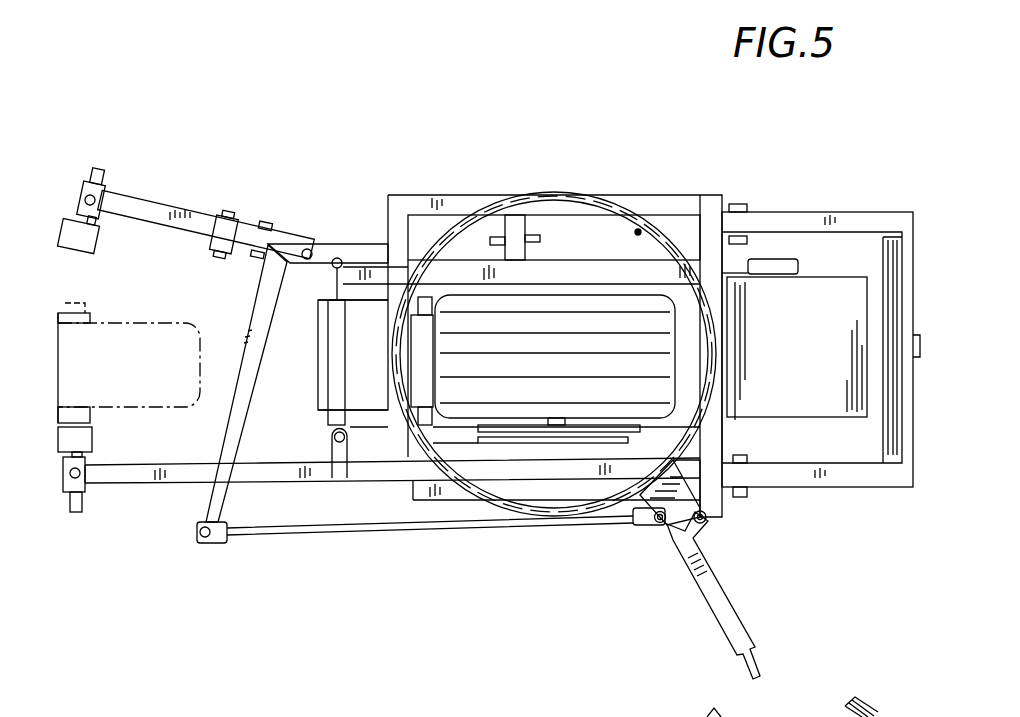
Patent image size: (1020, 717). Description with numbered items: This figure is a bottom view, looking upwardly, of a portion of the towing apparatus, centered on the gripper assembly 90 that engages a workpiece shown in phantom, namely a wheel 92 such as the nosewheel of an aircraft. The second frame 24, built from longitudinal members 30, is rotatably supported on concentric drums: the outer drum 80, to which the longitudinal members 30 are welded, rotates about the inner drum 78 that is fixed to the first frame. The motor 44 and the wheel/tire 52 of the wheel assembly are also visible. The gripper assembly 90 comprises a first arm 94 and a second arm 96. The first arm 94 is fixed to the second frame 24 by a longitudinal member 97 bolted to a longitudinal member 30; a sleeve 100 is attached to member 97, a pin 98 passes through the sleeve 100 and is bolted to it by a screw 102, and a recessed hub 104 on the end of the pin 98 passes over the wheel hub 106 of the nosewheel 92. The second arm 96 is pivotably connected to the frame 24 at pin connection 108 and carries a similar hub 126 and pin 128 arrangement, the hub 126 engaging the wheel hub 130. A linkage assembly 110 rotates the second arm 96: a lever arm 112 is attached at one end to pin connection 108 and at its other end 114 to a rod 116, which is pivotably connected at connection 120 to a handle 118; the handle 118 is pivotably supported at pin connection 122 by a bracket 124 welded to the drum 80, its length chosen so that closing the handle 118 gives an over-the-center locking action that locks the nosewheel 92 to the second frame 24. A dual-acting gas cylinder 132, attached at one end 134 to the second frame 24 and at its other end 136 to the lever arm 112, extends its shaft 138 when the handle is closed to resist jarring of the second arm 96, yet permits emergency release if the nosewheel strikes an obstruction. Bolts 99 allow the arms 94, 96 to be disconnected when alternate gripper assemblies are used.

The second frame 24 is at (288, 490).
The longitudinal member 30 is at (410, 250).
The motor 44 is at (822, 297).
The wheel/tire 52 is at (590, 322).
The inner drum 78 is at (640, 232).
The outer drum 80 is at (610, 200).
The gripper assembly 90 is at (185, 173).
The wheel 92 is at (190, 335).
The first arm 94 is at (172, 483).
The second arm 96 is at (143, 198).
The longitudinal member 97 is at (207, 470).
The pin 98 is at (78, 512).
The bolts 99 is at (267, 227).
The sleeve 100 is at (90, 490).
The screw 102 is at (85, 472).
The hub 104 is at (100, 442).
The wheel hub 106 is at (87, 417).
The pin connection 108 is at (305, 248).
The linkage assembly 110 is at (446, 555).
The lever arm 112 is at (255, 352).
The other end 114 is at (222, 522).
The rod 116 is at (327, 533).
The handle 118 is at (723, 608).
The connection 120 is at (655, 525).
The pin connection 122 is at (708, 523).
The bracket 124 is at (700, 493).
The hub 126 is at (98, 237).
The pin 128 is at (92, 168).
The wheel hub 130 is at (90, 313).
The dual-acting gas cylinder 132 is at (340, 345).
The one end 134 is at (342, 445).
The other end 136 is at (336, 257).
The shaft 138 is at (358, 310).